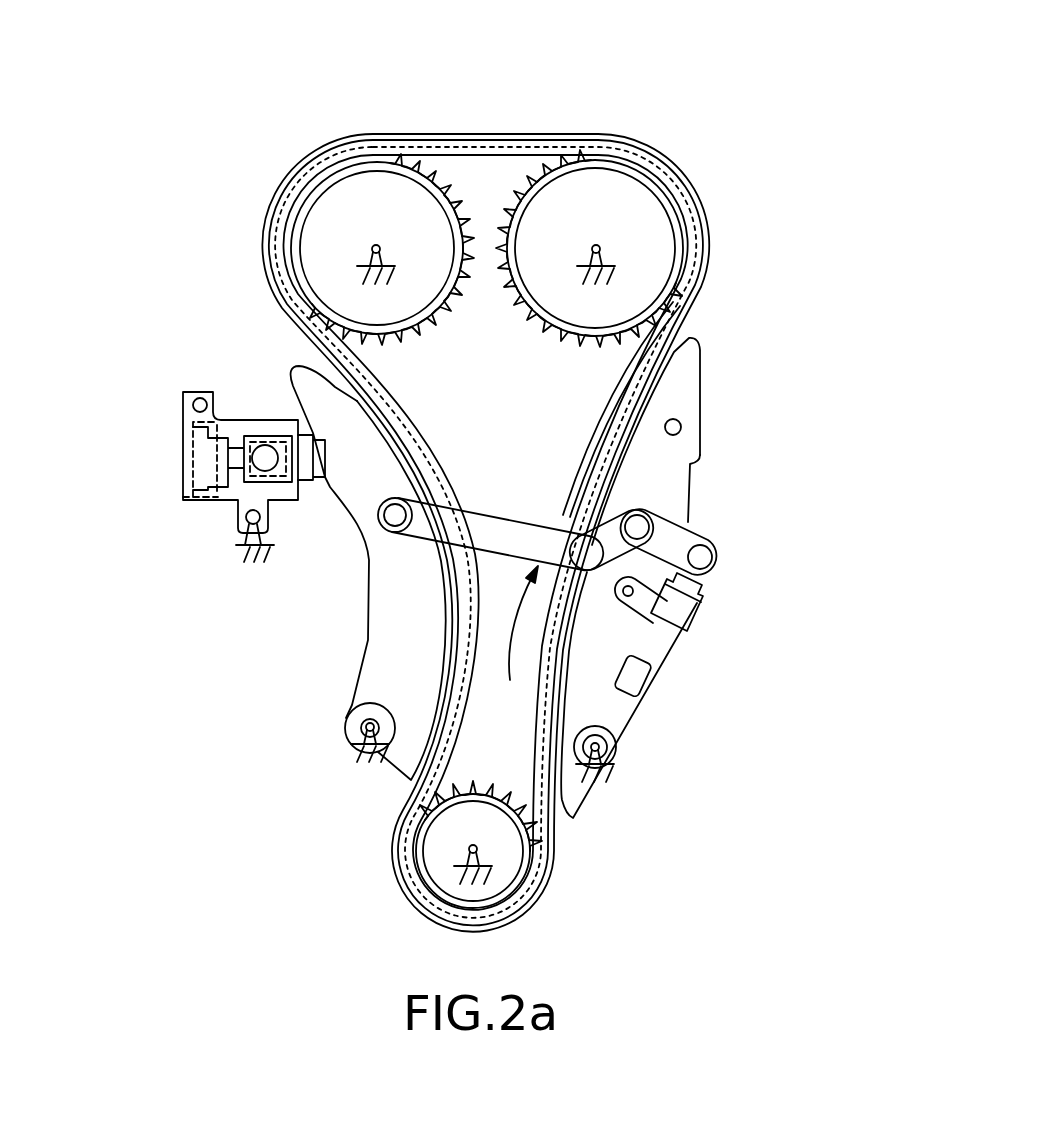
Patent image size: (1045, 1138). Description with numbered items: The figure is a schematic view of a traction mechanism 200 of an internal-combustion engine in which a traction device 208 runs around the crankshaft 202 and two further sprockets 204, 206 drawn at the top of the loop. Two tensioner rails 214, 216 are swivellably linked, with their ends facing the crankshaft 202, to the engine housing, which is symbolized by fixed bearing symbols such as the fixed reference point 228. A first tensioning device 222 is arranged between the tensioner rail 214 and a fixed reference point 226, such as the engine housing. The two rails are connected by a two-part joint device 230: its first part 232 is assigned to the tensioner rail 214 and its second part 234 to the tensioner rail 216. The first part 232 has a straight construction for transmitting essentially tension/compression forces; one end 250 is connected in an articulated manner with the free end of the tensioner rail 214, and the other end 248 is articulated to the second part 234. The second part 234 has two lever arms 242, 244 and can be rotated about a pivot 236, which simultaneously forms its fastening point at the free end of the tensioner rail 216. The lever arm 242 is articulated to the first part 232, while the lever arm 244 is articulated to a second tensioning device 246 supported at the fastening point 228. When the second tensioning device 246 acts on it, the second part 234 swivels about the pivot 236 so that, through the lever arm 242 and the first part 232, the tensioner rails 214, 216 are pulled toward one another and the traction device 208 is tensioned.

The traction mechanism 200 is at (738, 300).
The crankshaft 202 is at (442, 848).
The camshaft sprocket 204 is at (350, 212).
The camshaft sprocket 206 is at (630, 222).
The traction device 208 is at (475, 157).
The tensioner rail 214 is at (393, 607).
The tensioner rail 216 is at (665, 462).
The first tensioning device 222 is at (200, 437).
The fixed reference point 226 is at (247, 538).
The fixed reference point 228 is at (603, 777).
The two-part joint device 230 is at (508, 642).
The first part of the joint device 232 is at (514, 532).
The second part of the joint device 234 is at (697, 557).
The pivot 236 is at (637, 527).
The lever arm 242 is at (597, 550).
The lever arm 244 is at (699, 557).
The second tensioning device 246 is at (638, 668).
The other end of the first part 248 is at (589, 505).
The one end of the first part 250 is at (427, 527).